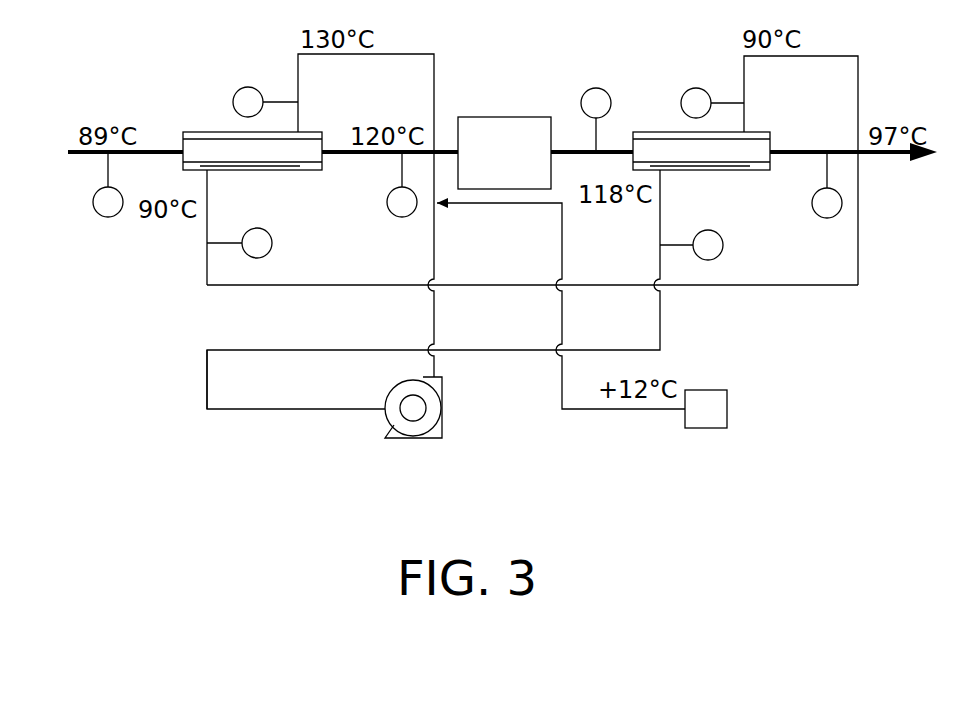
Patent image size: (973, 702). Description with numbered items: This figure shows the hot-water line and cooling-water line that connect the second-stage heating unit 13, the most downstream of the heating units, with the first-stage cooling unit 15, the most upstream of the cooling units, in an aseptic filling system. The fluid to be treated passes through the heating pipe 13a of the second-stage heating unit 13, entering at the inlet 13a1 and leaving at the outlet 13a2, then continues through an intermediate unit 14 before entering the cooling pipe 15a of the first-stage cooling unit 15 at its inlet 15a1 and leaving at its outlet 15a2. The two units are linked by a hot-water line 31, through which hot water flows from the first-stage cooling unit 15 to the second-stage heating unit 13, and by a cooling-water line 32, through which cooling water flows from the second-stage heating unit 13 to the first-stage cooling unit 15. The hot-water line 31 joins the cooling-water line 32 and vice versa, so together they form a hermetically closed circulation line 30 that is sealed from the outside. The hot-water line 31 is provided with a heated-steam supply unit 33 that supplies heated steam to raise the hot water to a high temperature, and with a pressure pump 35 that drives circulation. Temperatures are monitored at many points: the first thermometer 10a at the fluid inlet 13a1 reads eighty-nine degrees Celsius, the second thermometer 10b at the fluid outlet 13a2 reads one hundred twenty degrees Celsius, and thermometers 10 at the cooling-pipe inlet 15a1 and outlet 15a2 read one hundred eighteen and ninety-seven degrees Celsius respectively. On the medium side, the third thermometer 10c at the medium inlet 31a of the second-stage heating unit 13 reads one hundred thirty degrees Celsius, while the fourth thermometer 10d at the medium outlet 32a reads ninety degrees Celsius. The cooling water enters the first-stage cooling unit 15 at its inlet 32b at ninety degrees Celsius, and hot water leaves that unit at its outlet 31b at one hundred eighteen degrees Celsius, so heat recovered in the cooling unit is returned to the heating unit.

The thermometer 10 is at (596, 88).
The first thermometer 10a is at (108, 217).
The second thermometer 10b is at (386, 203).
The third thermometer 10c is at (248, 86).
The fourth thermometer 10d is at (272, 243).
The second-stage heating unit 13 is at (205, 130).
The heating pipe 13a is at (243, 168).
The inlet of heating pipe 13a1 is at (167, 148).
The outlet of heating pipe 13a2 is at (340, 148).
The reactor / process unit 14 is at (510, 116).
The first-stage cooling unit 15 is at (664, 130).
The cooling pipe 15a is at (703, 168).
The inlet of cooling pipe 15a1 is at (624, 148).
The outlet of cooling pipe 15a2 is at (780, 148).
The hermetically closed circulation line 30 is at (200, 424).
The hot-water line 31 is at (270, 410).
The medium inlet 31a is at (330, 108).
The outlet of first-stage cooling unit 31b is at (658, 222).
The cooling-water line 32 is at (858, 266).
The medium outlet 32a is at (205, 184).
The inlet of first-stage cooling unit 32b is at (744, 118).
The heated-steam supply unit 33 is at (727, 411).
The pressure pump 35 is at (416, 440).